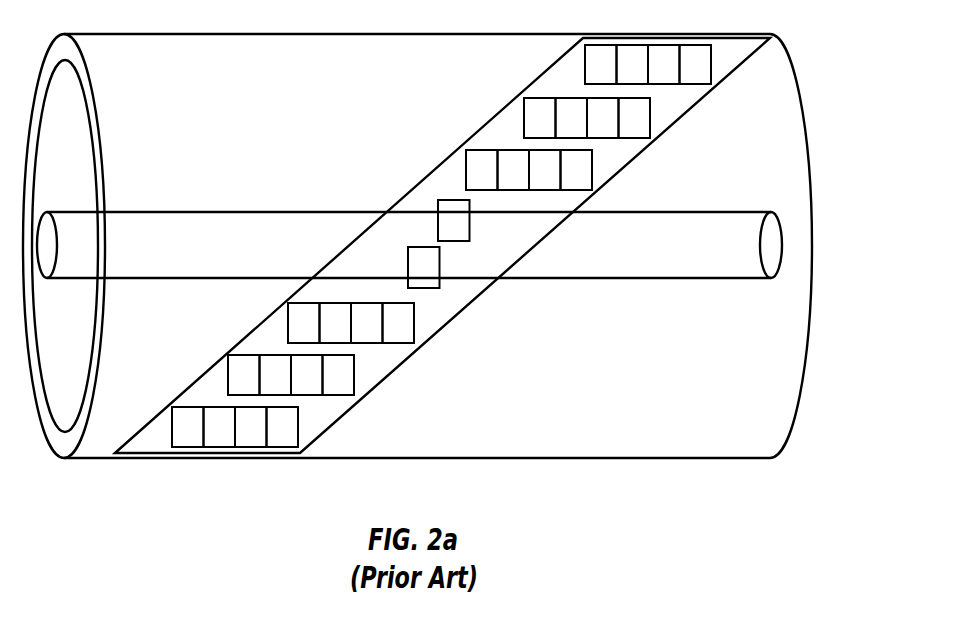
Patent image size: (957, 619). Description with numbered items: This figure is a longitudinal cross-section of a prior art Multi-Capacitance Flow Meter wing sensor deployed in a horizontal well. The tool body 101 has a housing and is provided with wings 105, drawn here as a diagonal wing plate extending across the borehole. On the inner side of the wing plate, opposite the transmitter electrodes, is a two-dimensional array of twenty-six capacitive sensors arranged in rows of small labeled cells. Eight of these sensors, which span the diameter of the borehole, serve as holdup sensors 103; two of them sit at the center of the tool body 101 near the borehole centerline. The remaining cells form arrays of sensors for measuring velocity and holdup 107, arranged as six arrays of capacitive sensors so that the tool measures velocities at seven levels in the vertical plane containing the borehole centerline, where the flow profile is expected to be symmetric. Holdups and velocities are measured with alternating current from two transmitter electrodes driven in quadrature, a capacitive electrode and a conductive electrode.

The tool body 101 is at (697, 212).
The holdup sensors 103 is at (437, 205).
The wings 105 is at (262, 323).
The arrays of sensors for measuring velocity and holdup 107 is at (584, 68).